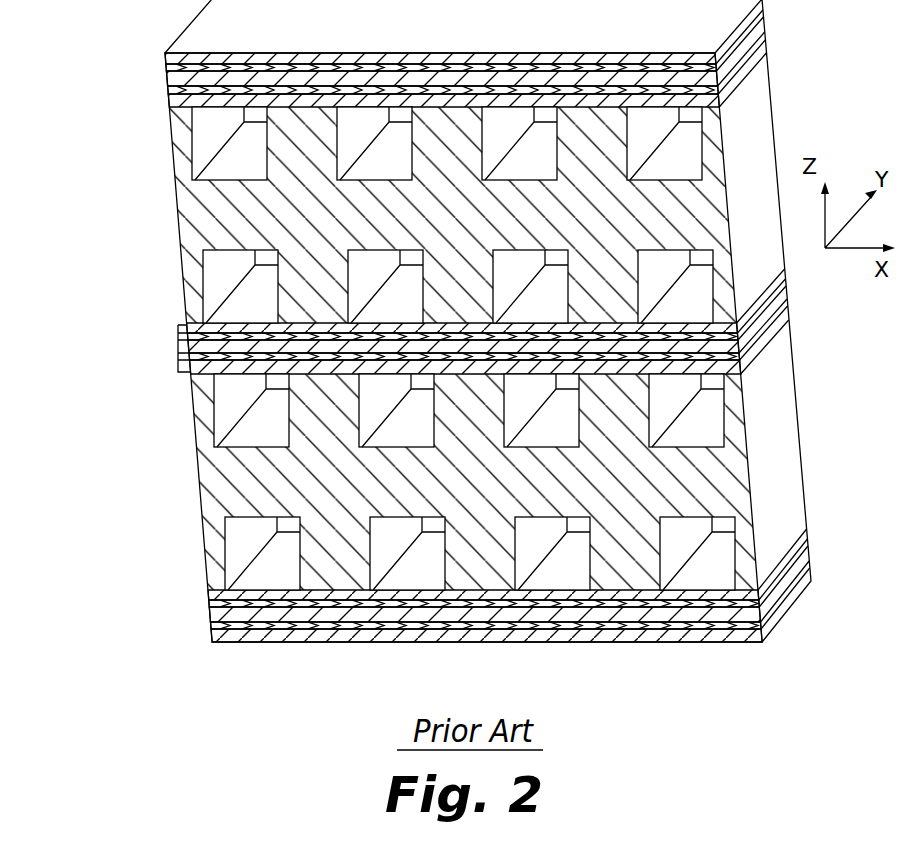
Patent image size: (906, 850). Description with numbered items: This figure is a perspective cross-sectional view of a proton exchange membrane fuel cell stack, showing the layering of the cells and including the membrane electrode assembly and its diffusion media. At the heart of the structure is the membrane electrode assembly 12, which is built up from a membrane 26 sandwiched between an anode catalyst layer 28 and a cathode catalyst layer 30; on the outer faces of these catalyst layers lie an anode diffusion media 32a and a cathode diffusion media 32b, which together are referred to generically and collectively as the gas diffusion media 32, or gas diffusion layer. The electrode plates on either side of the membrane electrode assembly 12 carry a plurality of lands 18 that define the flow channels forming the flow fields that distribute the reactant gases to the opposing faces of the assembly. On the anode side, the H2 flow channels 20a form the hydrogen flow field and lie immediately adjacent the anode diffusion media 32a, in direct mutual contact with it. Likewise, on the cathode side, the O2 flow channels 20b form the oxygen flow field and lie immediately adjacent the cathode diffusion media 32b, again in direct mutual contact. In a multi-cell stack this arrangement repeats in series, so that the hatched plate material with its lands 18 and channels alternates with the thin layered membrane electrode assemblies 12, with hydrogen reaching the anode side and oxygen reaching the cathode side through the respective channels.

The membrane electrode assembly 12 is at (415, 326).
The lands 18 is at (175, 138).
The H2 flow channels 20a is at (204, 263).
The O2 flow channels 20b is at (193, 168).
The membrane 26 is at (177, 343).
The anode catalyst layer 28 is at (180, 333).
The cathode catalyst layer 30 is at (180, 367).
The gas diffusion media 32 is at (391, 347).
The anode diffusion media 32a is at (182, 328).
The cathode diffusion media 32b is at (182, 372).